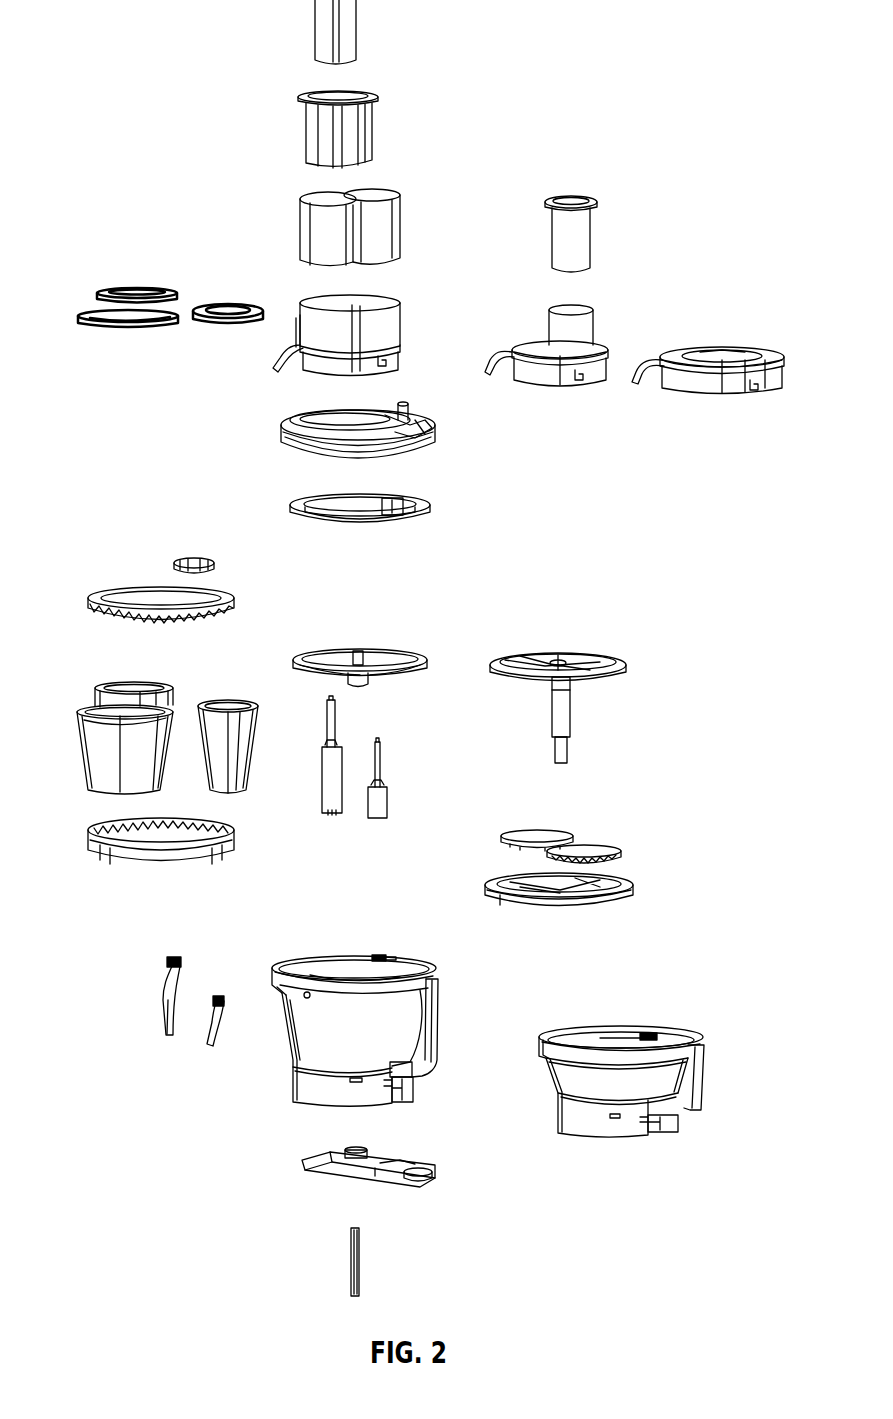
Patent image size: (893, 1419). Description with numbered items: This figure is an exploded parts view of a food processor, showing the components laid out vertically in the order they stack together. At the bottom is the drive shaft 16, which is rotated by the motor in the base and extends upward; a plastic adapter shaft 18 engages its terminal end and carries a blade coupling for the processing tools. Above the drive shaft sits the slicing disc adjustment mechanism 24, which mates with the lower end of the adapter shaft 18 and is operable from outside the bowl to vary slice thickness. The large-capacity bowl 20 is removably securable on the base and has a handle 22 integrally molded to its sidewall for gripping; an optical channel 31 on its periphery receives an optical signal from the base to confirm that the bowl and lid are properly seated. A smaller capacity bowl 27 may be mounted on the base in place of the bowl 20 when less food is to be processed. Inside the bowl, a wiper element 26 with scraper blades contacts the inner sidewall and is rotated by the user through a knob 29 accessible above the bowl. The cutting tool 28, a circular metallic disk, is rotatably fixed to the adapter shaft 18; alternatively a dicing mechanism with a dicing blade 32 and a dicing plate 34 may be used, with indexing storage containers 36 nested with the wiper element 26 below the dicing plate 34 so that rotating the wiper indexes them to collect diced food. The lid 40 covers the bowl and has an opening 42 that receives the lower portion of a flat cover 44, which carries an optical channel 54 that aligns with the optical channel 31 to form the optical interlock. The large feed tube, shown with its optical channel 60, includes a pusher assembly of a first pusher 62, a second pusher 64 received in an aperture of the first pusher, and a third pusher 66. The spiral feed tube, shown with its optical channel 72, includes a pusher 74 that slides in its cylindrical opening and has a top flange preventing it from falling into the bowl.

The drive shaft 16 is at (362, 1262).
The adapter shaft 18 is at (328, 788).
The bowl 20 is at (302, 1043).
The handle 22 is at (428, 1020).
The slicing disc adjustment mechanism 24 is at (322, 1172).
The wiper element 26 is at (179, 1042).
The smaller capacity bowl 27 is at (682, 1007).
The cutting tool 28 is at (400, 638).
The knob 29 is at (432, 425).
The optical channel 31 is at (281, 1000).
The dicing blade 32 is at (601, 658).
The dicing plate 34 is at (631, 849).
The indexing storage containers 36 is at (78, 688).
The lid 40 is at (745, 355).
The opening 42 is at (388, 325).
The flat cover 44 is at (586, 363).
The optical channel 54 is at (686, 356).
The optical channel 60 is at (292, 332).
The first pusher 62 is at (380, 225).
The second pusher 64 is at (355, 122).
The third pusher 66 is at (347, 28).
The optical channel 72 is at (510, 348).
The pusher 74 is at (580, 232).